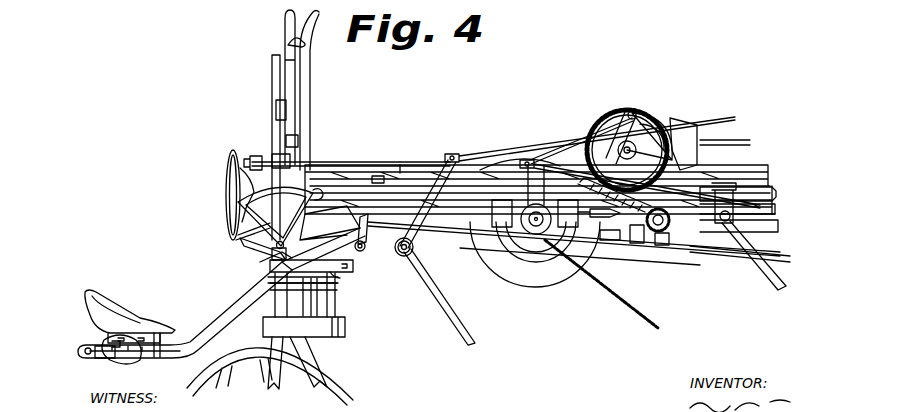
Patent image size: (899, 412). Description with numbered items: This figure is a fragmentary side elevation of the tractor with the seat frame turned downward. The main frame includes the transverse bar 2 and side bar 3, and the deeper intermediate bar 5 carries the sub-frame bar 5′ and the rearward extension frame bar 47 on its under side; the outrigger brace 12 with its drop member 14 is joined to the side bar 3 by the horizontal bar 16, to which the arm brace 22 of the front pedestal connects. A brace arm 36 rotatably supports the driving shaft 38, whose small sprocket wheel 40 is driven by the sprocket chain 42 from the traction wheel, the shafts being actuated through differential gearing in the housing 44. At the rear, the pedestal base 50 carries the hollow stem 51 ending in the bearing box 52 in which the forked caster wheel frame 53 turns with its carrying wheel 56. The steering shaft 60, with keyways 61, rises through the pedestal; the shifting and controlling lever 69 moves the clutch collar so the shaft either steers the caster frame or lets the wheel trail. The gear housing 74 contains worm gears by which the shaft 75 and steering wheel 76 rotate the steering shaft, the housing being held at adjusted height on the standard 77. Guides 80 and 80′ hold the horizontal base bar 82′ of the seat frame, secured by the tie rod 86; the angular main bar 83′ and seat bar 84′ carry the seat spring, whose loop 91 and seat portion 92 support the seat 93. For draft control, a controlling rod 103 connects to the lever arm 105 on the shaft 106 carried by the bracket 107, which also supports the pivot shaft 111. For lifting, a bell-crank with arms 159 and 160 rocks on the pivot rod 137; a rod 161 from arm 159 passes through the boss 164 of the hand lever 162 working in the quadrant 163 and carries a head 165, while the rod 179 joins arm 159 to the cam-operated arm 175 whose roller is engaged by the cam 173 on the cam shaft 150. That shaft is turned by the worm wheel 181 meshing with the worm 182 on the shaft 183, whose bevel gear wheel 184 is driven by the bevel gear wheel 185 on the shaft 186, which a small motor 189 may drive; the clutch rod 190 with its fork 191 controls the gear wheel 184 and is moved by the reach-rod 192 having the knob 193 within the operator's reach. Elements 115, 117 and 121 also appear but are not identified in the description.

The standard 77 is at (271, 85).
The steering shaft 60 is at (302, 88).
The longitudinal keyways 61 is at (301, 108).
The lever 162 is at (283, 110).
The head 165 is at (276, 152).
The boss 164 is at (292, 138).
The knob 193 is at (250, 161).
The steering wheel 76 is at (227, 180).
The quadrant 163 is at (240, 200).
The shaft 75 is at (236, 216).
The gear housing 74 is at (322, 190).
The shifting and controlling lever 69 is at (258, 252).
The pivot shaft 111 is at (236, 262).
The guide 80′ is at (268, 262).
The main bar 83′ is at (238, 308).
The guide 80 is at (292, 289).
The hollow stem 51 is at (302, 302).
The seat 93 is at (138, 318).
The seat bar 84′ is at (105, 358).
The loop 91 is at (118, 362).
The seat portion 92 is at (160, 358).
The horizontal base bar 82′ is at (352, 268).
The tie rod 86 is at (338, 275).
The pedestal base 50 is at (322, 278).
The bearing box 52 is at (346, 328).
The forked caster wheel frame 53 is at (322, 356).
The carrying wheel 56 is at (348, 396).
The arm 160 is at (452, 330).
The lever arm 105 is at (379, 234).
The shaft 106 is at (388, 255).
The pivot rod 137 is at (404, 256).
The side bar 3 is at (420, 180).
The transverse bar 2 is at (374, 190).
The bracket 107 is at (376, 196).
The rod 161 is at (402, 160).
The arm 159 is at (428, 178).
The rod 179 is at (492, 152).
The reach-rod 192 is at (508, 152).
The clutch rod 190 is at (530, 160).
The fork 191 is at (596, 165).
The cam-operated arm 175 is at (623, 134).
The worm wheel 181 is at (634, 110).
The cam 173 is at (664, 112).
The cam shaft 150 is at (670, 184).
The small engine or motor 189 is at (692, 124).
The bevel gear wheel 184 is at (752, 140).
The outrigger brace 12 is at (732, 190).
The intermediate bar 5 is at (775, 200).
The drop member 14 is at (778, 212).
The sub-frame bar 5′ is at (780, 227).
The arm brace 22 is at (780, 288).
The brace arm 36 is at (518, 258).
The driving shaft 38 is at (534, 250).
The small sprocket wheel 40 is at (556, 245).
The bracket 117 is at (524, 270).
The bracket 121 is at (540, 262).
The shaft 115 is at (599, 226).
The sprocket chain 42 is at (640, 320).
The extension frame bar 47 is at (446, 243).
The housing 44 is at (495, 262).
The worm 182 is at (604, 240).
The shaft 183 is at (642, 240).
The bevel gear wheel 185 is at (668, 262).
The shaft 186 is at (672, 250).
The horizontal bar 16 is at (706, 248).
The controlling rod 103 is at (735, 258).